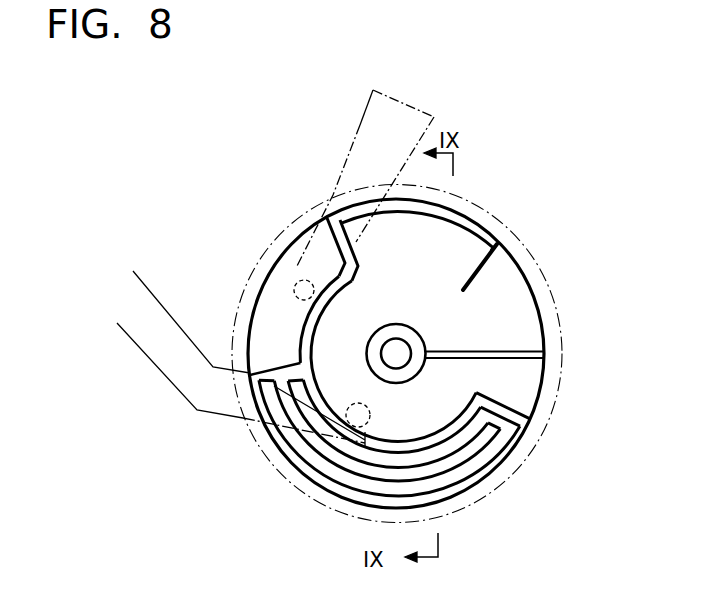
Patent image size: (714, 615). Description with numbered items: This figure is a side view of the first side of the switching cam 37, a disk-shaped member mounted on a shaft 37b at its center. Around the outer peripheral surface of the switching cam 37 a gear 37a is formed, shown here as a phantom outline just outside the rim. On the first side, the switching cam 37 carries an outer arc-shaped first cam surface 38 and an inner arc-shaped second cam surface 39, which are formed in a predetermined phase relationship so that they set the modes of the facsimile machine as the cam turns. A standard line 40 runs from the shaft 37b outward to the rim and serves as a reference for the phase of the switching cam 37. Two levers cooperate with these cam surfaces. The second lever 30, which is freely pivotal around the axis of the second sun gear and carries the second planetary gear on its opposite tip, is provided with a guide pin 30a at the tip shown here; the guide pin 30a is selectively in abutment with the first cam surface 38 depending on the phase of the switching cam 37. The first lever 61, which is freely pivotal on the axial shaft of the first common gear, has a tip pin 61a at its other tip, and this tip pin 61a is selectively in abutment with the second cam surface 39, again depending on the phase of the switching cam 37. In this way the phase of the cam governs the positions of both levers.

The second lever 30 is at (367, 118).
The guide pin 30a is at (296, 288).
The switching cam 37 is at (548, 263).
The gear 37a is at (565, 318).
The shaft 37b is at (409, 346).
The first cam surface 38 is at (478, 232).
The second cam surface 39 is at (311, 347).
The standard line 40 is at (521, 365).
The first lever 61 is at (153, 358).
The tip pin 61a is at (370, 414).